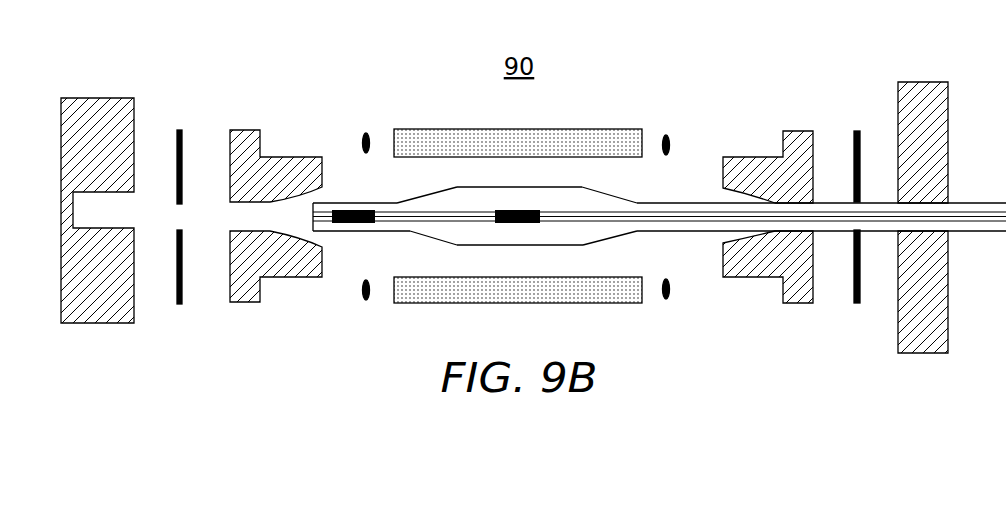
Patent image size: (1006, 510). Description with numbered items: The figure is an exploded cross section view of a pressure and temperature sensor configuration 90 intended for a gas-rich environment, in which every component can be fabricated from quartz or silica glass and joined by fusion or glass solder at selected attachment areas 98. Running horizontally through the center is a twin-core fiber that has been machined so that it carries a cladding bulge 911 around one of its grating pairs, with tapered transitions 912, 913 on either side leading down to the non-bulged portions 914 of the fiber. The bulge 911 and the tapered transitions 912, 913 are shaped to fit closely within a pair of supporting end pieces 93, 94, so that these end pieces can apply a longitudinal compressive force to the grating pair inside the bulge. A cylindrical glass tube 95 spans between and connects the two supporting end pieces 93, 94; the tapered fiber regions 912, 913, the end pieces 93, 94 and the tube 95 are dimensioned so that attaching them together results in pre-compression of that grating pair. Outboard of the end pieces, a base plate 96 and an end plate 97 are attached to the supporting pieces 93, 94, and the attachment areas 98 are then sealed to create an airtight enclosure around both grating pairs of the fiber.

The pressure and temperature sensor configuration 90 is at (659, 202).
The supporting end piece 93 is at (276, 216).
The supporting end piece 94 is at (768, 217).
The cylindrical glass tube 95 is at (518, 206).
The base plate 96 is at (97, 199).
The end plate 97 is at (923, 207).
The attachment area 98 is at (182, 170).
The cladding bulge 911 is at (578, 184).
The tapered transition 912 is at (456, 184).
The tapered transition 913 is at (636, 201).
The non-bulged portion 914 is at (317, 202).